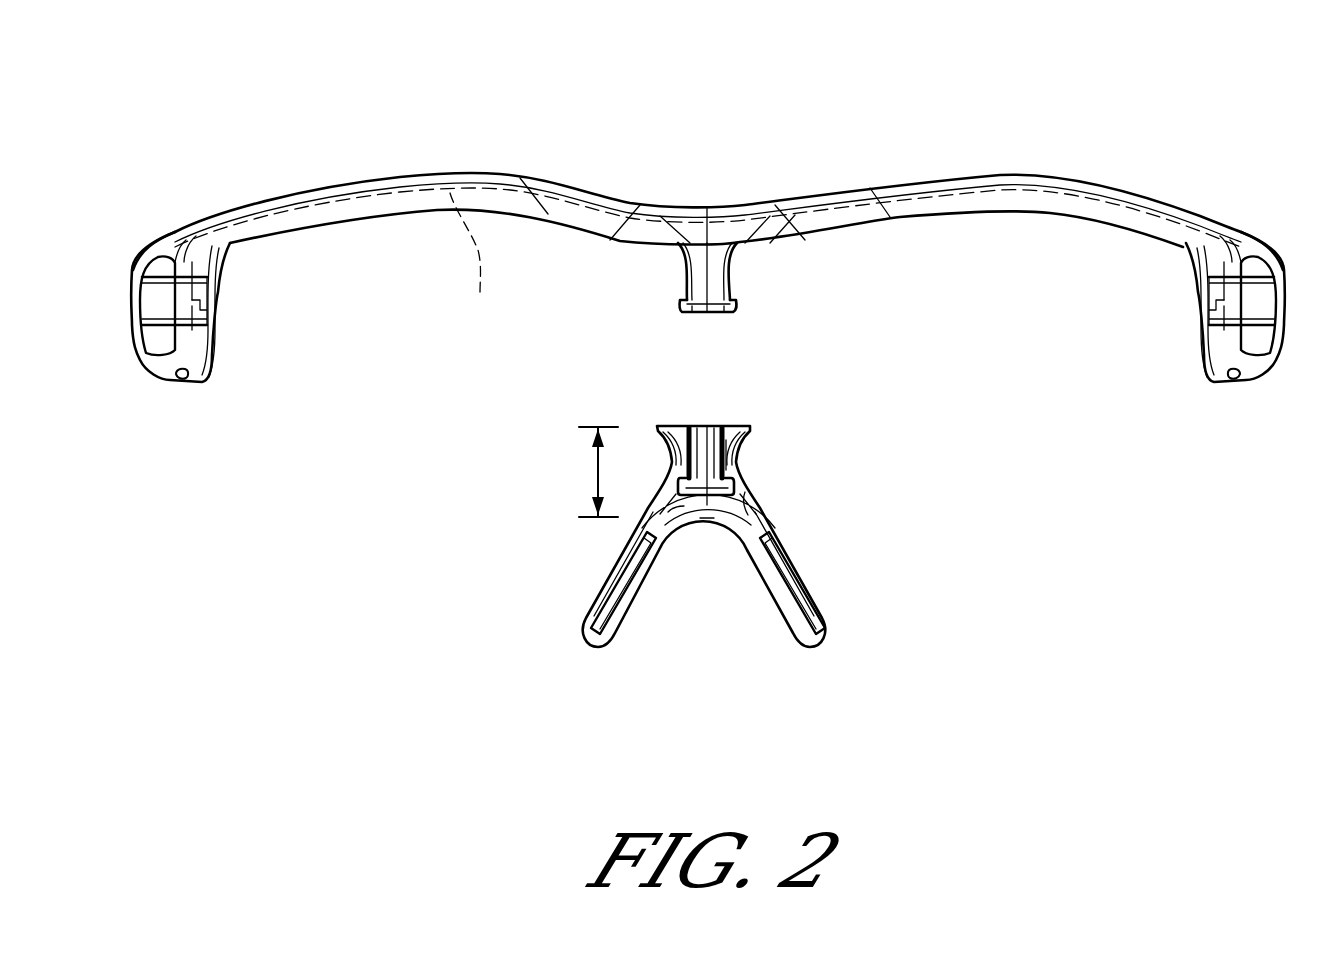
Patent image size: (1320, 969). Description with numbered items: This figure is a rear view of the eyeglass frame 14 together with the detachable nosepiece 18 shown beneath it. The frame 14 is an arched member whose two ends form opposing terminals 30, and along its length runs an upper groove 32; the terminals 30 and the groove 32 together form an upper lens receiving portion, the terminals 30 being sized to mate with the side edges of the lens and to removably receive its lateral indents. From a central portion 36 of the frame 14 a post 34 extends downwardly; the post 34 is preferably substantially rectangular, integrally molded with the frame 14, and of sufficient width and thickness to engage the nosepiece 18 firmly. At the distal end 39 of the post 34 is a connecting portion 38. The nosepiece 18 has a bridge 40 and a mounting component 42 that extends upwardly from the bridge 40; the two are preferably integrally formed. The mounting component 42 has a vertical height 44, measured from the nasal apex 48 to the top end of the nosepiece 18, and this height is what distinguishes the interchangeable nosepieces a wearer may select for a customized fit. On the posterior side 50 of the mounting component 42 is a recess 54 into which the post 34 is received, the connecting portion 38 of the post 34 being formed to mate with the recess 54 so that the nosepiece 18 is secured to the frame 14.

The frame 14 is at (1010, 178).
The nosepiece 18 is at (767, 518).
The opposing terminals 30 is at (220, 317).
The upper groove 32 is at (468, 267).
The post 34 is at (706, 325).
The central portion 36 is at (737, 223).
The connecting portion 38 is at (687, 313).
The distal end 39 is at (722, 313).
The bridge 40 is at (676, 516).
The mounting component 42 is at (725, 462).
The vertical height 44 is at (597, 460).
The nasal apex 48 is at (708, 520).
The posterior side 50 is at (760, 497).
The recess 54 is at (703, 443).